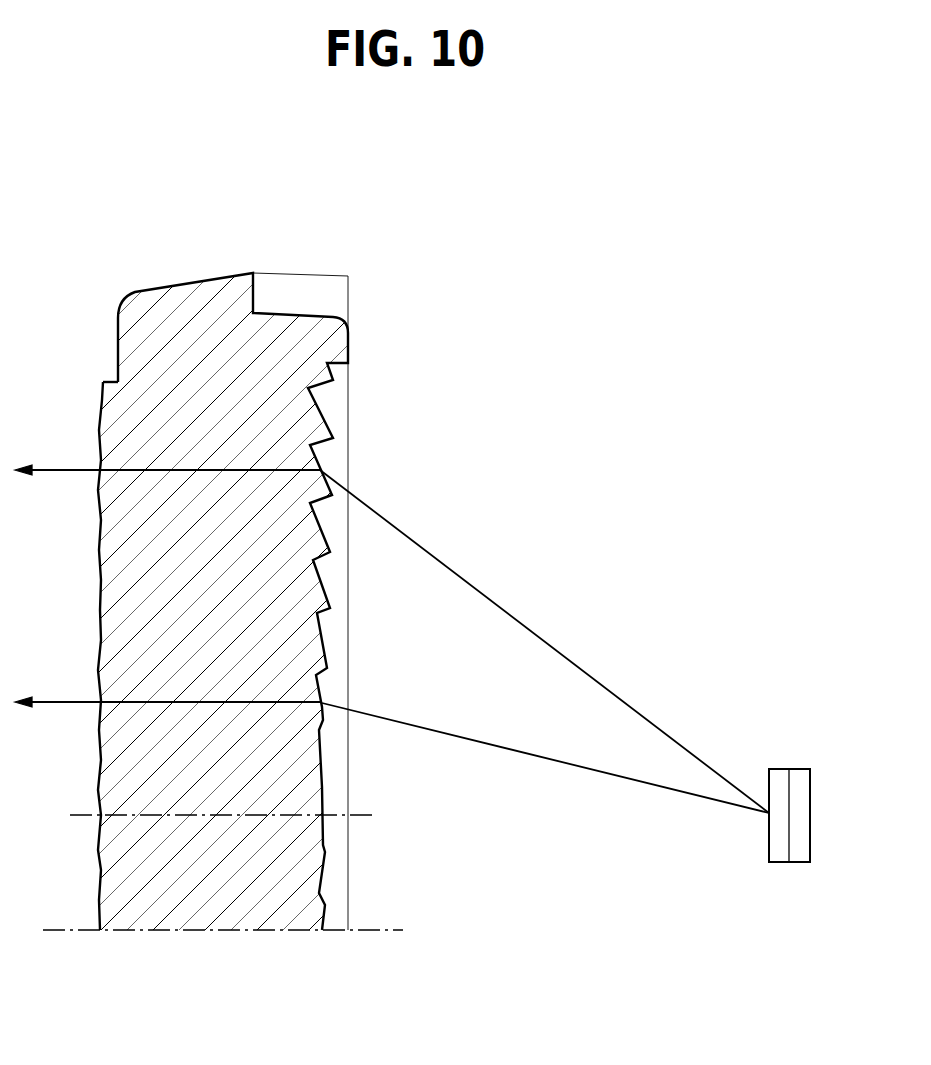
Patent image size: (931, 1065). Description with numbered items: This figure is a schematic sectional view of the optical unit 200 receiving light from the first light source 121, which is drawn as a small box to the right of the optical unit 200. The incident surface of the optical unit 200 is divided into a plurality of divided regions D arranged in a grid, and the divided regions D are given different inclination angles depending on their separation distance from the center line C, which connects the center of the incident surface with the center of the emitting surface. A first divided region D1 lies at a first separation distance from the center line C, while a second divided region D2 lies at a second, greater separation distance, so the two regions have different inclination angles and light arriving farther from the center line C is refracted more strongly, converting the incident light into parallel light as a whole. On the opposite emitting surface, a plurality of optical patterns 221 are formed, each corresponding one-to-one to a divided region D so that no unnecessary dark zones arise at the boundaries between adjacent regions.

The optical unit 200 is at (198, 280).
The optical patterns 221 is at (98, 457).
The first light source 121 is at (790, 862).
The divided regions D is at (405, 472).
The first divided region D1 is at (318, 679).
The second divided region D2 is at (317, 456).
The center line C is at (210, 817).